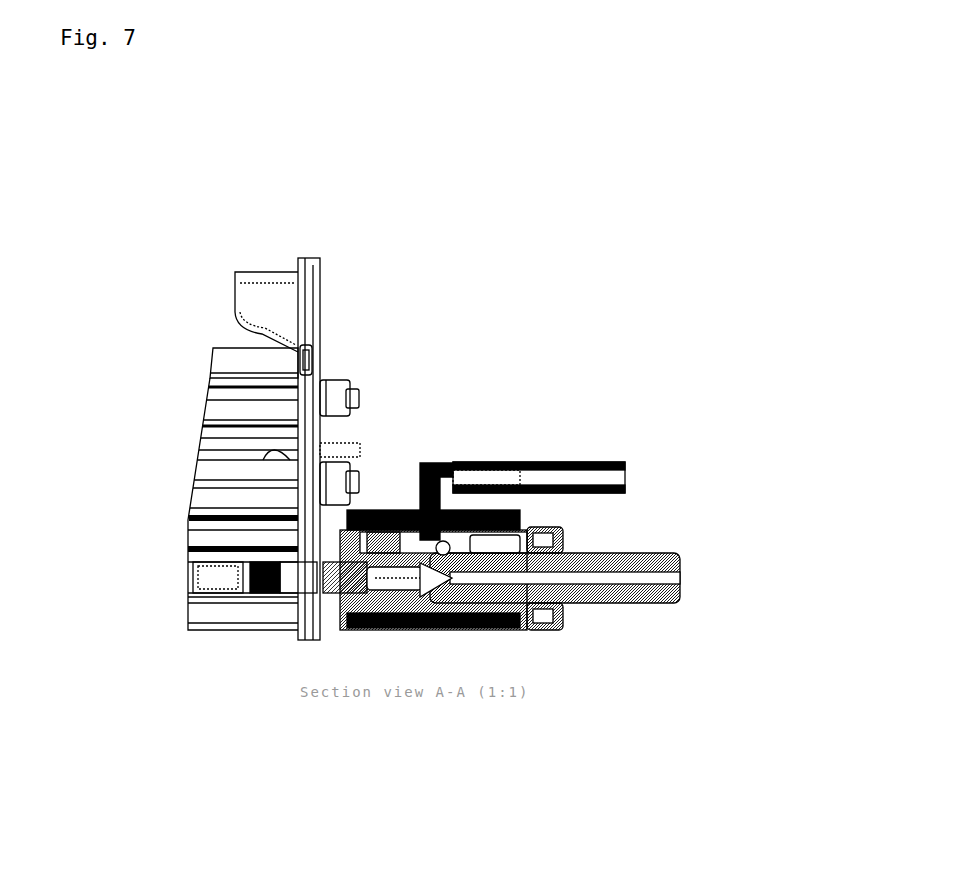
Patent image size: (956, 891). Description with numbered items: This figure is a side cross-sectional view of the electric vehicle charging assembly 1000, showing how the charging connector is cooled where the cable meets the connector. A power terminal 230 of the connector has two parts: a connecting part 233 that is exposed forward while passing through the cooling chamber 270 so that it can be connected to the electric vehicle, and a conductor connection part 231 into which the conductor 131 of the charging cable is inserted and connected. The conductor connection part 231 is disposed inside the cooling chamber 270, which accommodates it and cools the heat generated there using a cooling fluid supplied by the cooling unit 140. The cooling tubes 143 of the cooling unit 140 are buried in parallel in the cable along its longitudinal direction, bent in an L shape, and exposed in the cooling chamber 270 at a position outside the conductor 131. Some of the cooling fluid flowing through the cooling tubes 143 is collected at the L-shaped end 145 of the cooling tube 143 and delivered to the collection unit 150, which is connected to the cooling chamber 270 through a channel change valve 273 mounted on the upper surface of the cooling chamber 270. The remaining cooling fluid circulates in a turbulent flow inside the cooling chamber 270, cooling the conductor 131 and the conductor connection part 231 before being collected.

The liquid ejection device 1000 is at (295, 128).
The power terminal 230 is at (365, 787).
The conductor connection part 231 is at (340, 580).
The connecting part 233 is at (224, 574).
The cooling chamber 270 is at (455, 612).
The channel change valve 273 is at (407, 468).
The L-shaped end 145 is at (444, 540).
The collection unit 150 is at (623, 470).
The cooling unit 140 is at (654, 577).
The cooling tube 143 is at (580, 605).
The conductor 131 is at (387, 598).